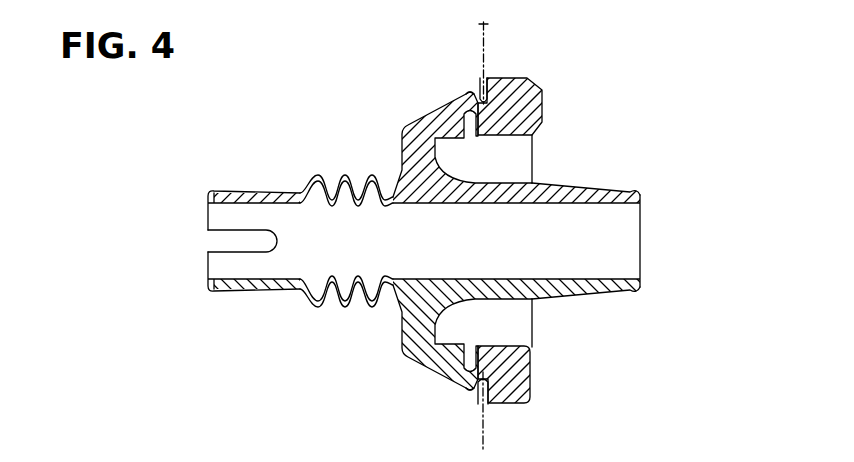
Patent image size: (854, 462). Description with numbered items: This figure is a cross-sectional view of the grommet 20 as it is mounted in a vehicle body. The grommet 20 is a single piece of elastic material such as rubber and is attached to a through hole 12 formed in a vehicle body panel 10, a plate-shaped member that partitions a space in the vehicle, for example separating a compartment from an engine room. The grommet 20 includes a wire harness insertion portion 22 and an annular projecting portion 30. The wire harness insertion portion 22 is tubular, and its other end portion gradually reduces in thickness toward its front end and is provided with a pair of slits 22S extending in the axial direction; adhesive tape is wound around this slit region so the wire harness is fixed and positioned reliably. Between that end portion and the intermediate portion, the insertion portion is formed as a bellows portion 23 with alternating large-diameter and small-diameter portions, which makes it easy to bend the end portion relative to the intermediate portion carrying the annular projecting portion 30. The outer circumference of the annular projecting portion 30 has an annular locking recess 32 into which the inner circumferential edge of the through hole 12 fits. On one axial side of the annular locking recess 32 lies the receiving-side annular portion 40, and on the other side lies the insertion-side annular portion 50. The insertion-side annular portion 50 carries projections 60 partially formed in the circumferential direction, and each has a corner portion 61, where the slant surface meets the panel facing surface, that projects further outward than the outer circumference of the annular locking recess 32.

The vehicle body panel 10 is at (488, 34).
The through hole 12 is at (466, 95).
The grommet 20 is at (592, 146).
The wire harness insertion portion 22 is at (597, 293).
The slits 22S is at (208, 240).
The bellows portion 23 is at (318, 172).
The annular projecting portion 30 is at (510, 407).
The annular locking recess 32 is at (478, 398).
The receiving-side annular portion 40 is at (540, 78).
The insertion-side annular portion 50 is at (402, 120).
The projections 60 is at (440, 106).
The corner portion 61 is at (476, 97).